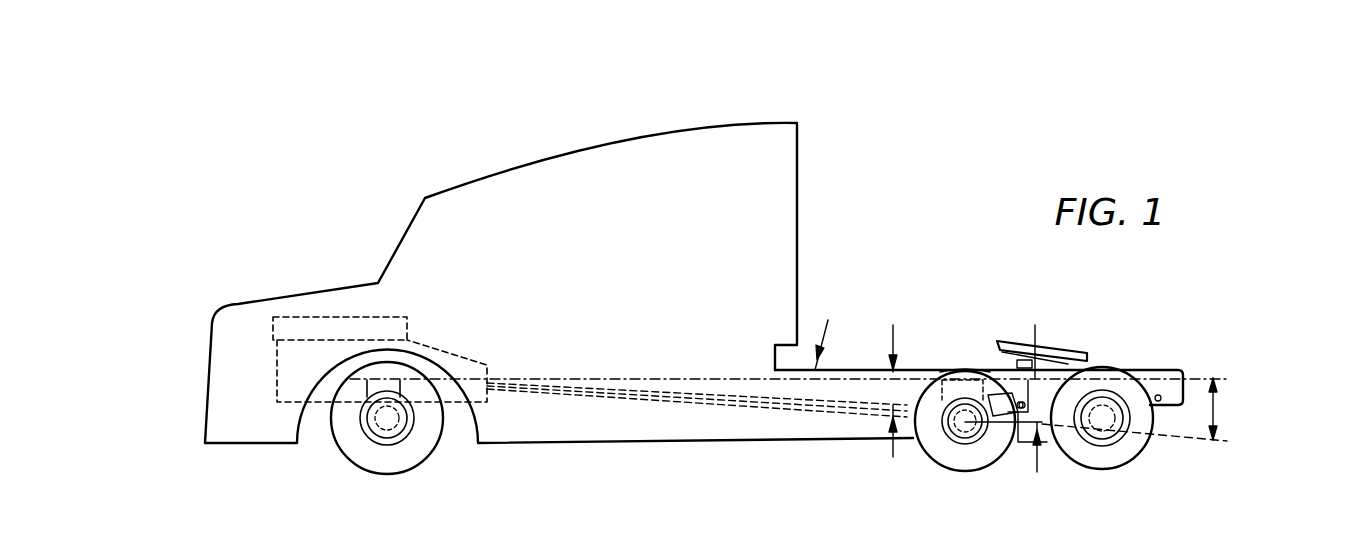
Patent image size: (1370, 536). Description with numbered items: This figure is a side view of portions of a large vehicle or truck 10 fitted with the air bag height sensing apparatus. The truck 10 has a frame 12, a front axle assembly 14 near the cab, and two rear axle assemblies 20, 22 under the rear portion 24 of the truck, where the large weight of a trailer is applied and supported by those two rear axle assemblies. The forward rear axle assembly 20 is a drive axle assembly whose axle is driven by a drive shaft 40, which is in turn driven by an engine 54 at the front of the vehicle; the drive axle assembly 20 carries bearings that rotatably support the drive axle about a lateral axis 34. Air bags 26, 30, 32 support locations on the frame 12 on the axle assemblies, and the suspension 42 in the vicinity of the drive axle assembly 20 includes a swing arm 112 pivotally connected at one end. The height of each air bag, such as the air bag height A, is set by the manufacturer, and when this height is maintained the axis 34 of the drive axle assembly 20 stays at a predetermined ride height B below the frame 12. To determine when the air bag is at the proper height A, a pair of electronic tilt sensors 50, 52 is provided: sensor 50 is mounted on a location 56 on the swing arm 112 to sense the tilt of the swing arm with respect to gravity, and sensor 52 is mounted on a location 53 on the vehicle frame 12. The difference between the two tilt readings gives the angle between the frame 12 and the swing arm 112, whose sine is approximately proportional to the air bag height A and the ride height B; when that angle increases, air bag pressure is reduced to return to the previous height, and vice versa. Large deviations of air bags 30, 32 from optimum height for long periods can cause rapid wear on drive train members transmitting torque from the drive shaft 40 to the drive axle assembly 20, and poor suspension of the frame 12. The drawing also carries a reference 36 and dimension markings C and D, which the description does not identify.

The truck 10 is at (738, 321).
The frame 12 is at (1172, 369).
The front axle assembly 14 is at (395, 436).
The drive axle assembly 20 is at (968, 450).
The rear axle assembly 22 is at (1108, 440).
The rear portion 24 is at (1012, 340).
The air bag 26 is at (367, 392).
The air bag 30 is at (947, 392).
The air bag 32 is at (1130, 380).
The axis 34 is at (942, 462).
The frame rail lower flange 36 is at (963, 372).
The drive shaft 40 is at (700, 405).
The suspension 42 is at (925, 443).
The electronic tilt sensor 50 is at (996, 400).
The electronic tilt sensor 52 is at (920, 368).
The location on vehicle frame 53 is at (913, 373).
The engine 54 is at (305, 317).
The location on swing arm 56 is at (443, 190).
The swing arm 112 is at (1010, 457).
The air bag height A is at (890, 445).
The ride height B is at (1040, 340).
The dimension C is at (1220, 410).
The dimension D is at (806, 325).